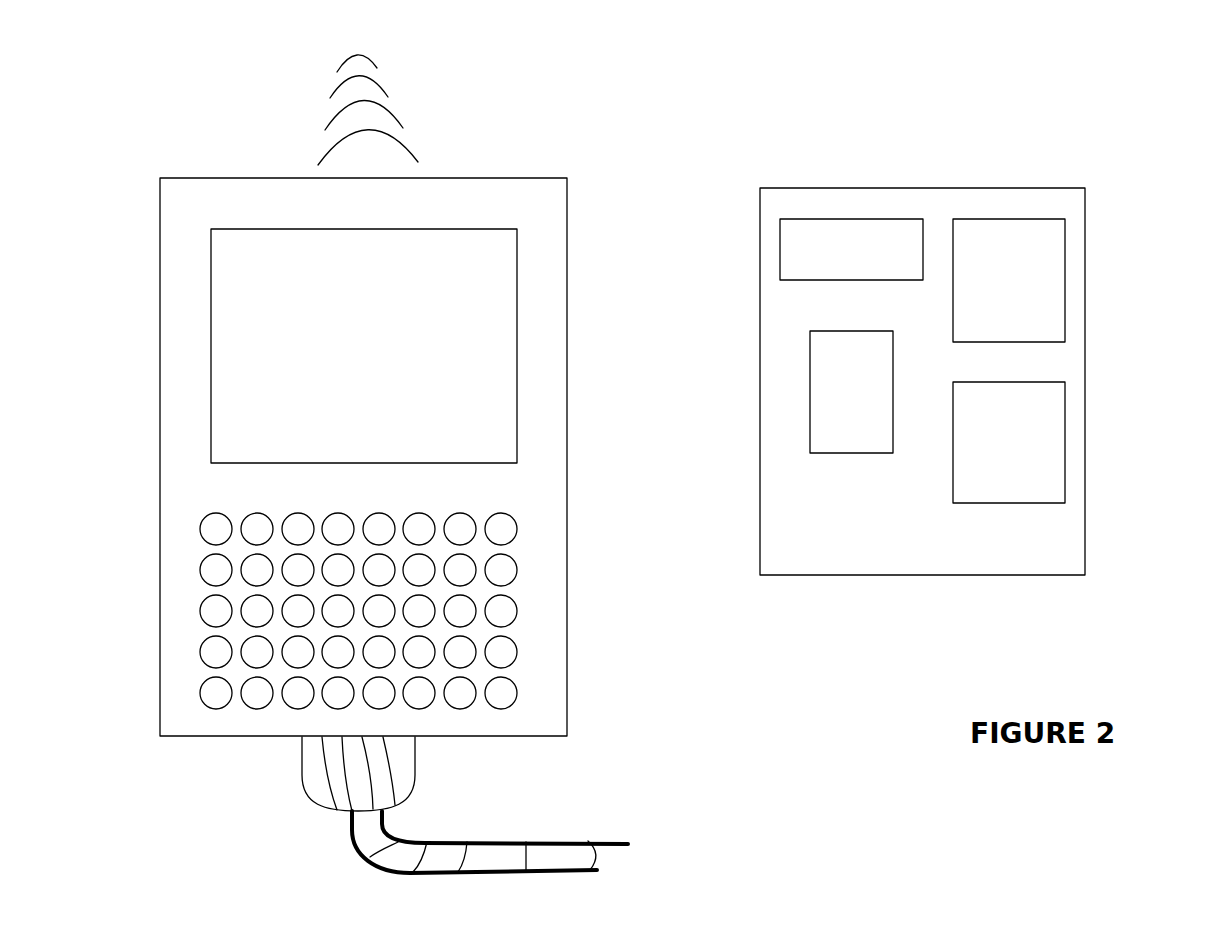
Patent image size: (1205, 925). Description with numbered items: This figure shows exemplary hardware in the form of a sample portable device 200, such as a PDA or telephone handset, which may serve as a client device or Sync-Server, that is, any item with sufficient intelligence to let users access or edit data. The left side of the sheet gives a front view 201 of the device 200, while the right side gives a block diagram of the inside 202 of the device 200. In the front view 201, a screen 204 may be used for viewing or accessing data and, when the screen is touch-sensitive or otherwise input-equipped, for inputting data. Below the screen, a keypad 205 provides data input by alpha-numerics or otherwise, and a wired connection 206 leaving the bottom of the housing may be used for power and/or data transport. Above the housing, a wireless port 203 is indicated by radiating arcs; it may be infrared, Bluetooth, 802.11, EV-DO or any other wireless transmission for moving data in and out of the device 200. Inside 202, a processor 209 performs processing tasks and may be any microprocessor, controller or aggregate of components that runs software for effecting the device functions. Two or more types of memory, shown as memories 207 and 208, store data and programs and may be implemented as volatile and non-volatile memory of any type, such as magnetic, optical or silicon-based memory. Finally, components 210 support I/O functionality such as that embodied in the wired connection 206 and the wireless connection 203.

The device 200 is at (668, 148).
The front view 201 is at (262, 178).
The inside 202 is at (1023, 188).
The wireless port 203 is at (403, 107).
The screen 204 is at (517, 260).
The keypad 205 is at (513, 579).
The wired connection 206 is at (415, 782).
The memory 207 is at (1068, 280).
The memory 208 is at (1065, 413).
The processor 209 is at (780, 250).
The components to support I/O functionality 210 is at (810, 372).